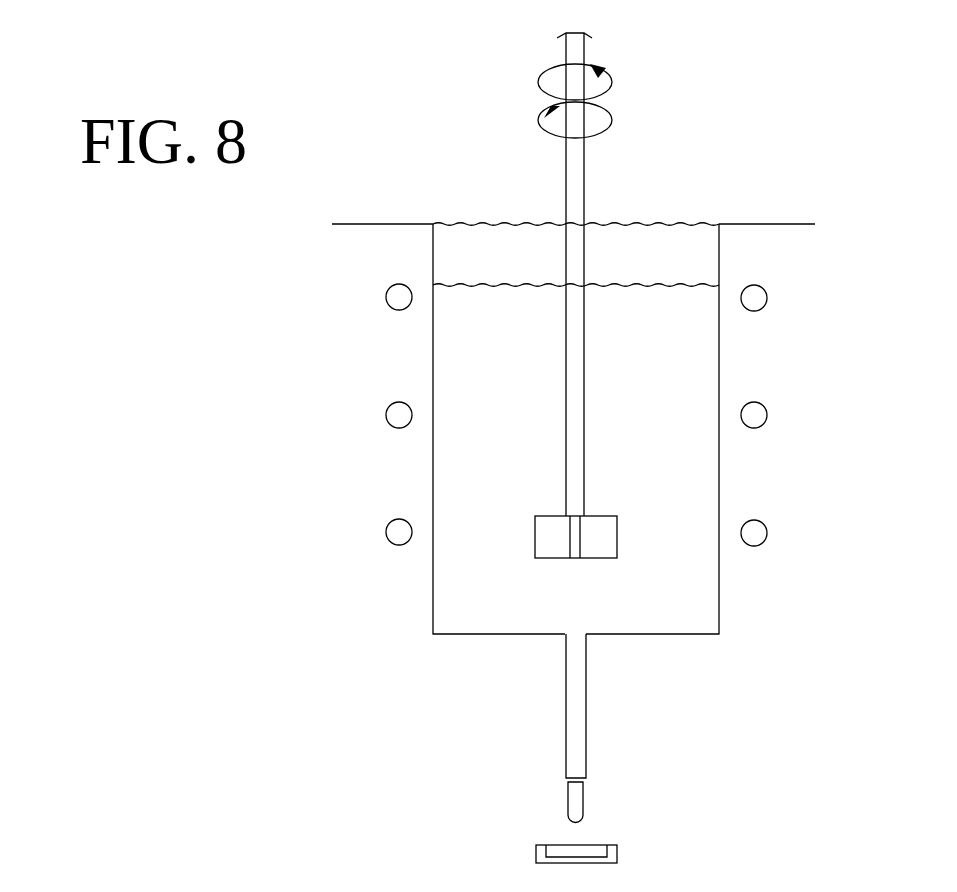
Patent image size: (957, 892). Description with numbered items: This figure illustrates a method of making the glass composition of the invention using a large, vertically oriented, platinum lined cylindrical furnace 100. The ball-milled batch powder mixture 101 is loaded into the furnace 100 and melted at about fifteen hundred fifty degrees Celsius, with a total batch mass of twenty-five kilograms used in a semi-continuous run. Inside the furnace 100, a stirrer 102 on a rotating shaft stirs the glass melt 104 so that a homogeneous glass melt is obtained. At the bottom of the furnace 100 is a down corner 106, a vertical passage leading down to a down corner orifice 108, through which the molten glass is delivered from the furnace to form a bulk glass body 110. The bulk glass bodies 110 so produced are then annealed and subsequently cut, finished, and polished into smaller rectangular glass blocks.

The furnace 100 is at (797, 132).
The batch powder mixture 101 is at (662, 215).
The stirrer 102 is at (623, 534).
The glass melt 104 is at (486, 600).
The down corner 106 is at (590, 704).
The down corner orifice 108 is at (565, 780).
The bulk glass body 110 is at (599, 842).